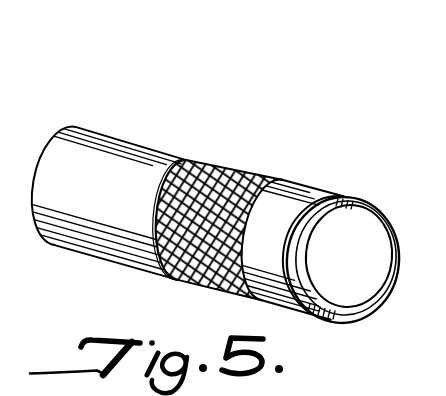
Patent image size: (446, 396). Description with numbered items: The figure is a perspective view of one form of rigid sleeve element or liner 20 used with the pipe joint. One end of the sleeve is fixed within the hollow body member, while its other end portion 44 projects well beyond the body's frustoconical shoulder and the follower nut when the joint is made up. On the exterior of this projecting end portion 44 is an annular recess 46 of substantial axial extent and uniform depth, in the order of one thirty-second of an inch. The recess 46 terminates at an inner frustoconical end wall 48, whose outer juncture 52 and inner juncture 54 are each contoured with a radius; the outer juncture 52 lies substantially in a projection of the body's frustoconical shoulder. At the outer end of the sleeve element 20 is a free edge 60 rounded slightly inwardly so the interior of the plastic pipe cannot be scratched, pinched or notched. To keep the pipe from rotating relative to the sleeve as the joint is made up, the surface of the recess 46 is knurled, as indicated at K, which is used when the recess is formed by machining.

The sleeve element 20 is at (187, 151).
The end portion 44 is at (300, 181).
The annular recess 46 is at (252, 172).
The inner frustoconical end wall 48 is at (164, 187).
The outer juncture 52 is at (168, 154).
The inner juncture 54 is at (157, 272).
The free edge 60 is at (357, 200).
The knurling K is at (208, 284).